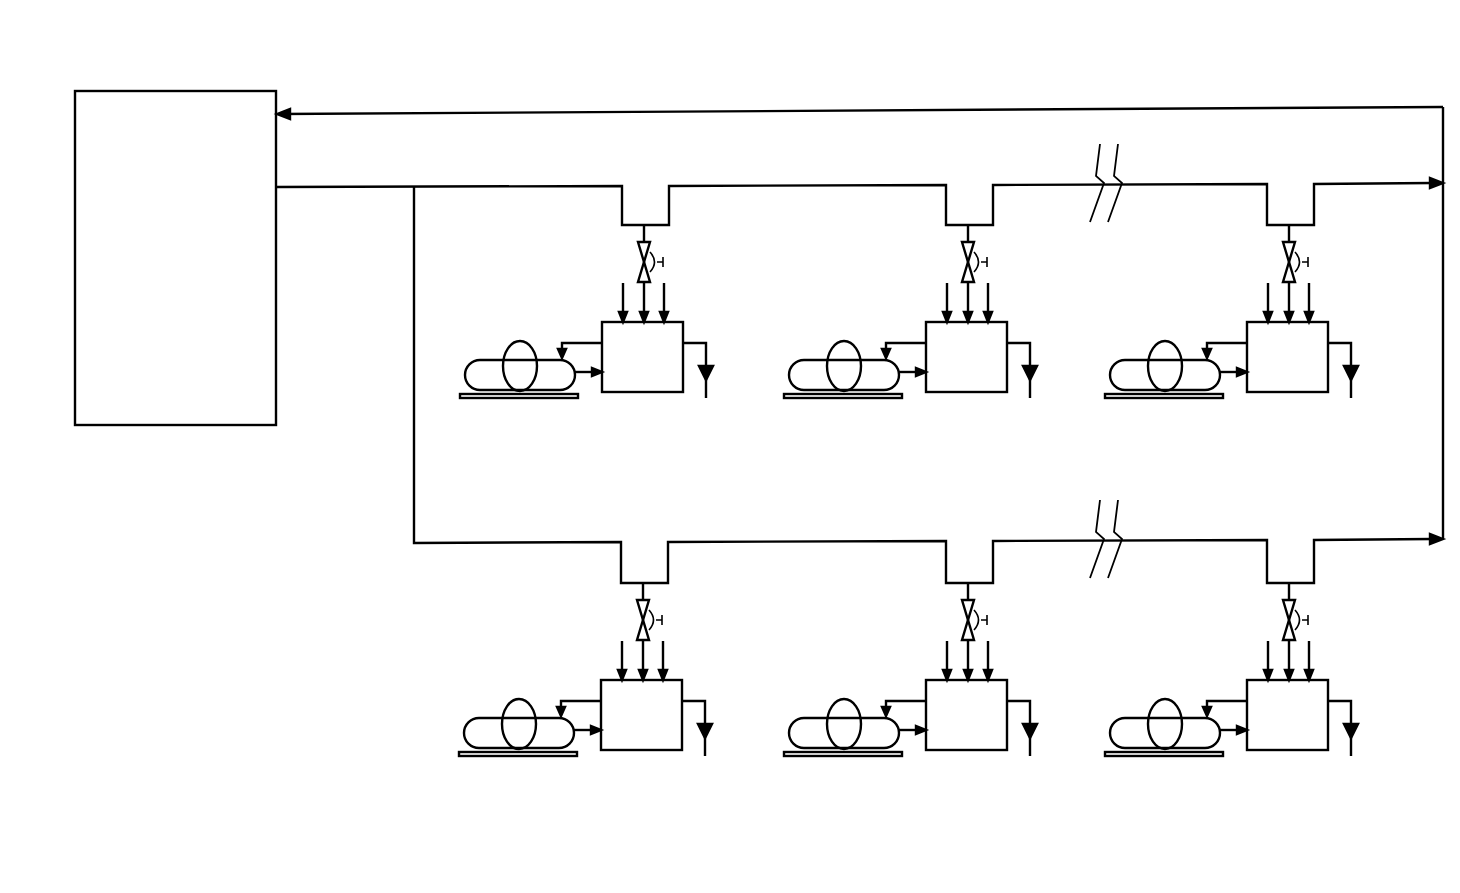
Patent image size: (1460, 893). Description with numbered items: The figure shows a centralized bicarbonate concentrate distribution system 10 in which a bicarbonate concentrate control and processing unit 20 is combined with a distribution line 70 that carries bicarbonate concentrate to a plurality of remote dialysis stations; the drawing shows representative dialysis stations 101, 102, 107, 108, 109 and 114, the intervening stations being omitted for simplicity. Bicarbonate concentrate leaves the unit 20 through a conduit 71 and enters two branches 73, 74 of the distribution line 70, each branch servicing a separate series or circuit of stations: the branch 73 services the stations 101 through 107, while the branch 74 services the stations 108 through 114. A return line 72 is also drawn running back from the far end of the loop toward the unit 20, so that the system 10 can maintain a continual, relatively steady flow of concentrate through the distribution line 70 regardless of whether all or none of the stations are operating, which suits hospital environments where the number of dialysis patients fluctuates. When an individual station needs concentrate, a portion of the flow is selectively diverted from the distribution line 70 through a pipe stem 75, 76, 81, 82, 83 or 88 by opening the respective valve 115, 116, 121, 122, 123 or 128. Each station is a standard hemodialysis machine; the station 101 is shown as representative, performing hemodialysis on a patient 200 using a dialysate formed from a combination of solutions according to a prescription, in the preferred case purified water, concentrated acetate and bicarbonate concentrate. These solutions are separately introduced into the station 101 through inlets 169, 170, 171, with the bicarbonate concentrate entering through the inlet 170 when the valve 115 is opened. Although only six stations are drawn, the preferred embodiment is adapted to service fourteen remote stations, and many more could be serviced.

The centralized bicarbonate concentrate distribution system 10 is at (272, 86).
The bicarbonate concentrate control and processing unit 20 is at (175, 258).
The distribution line 70 is at (402, 458).
The conduit 71 is at (365, 190).
The return line 72 is at (707, 110).
The branch 73 is at (548, 186).
The branch 74 is at (414, 324).
The pipe stem 75 is at (640, 235).
The pipe stem 76 is at (981, 253).
The pipe stem 81 is at (1296, 253).
The pipe stem 82 is at (648, 611).
The pipe stem 83 is at (974, 614).
The pipe stem 88 is at (1295, 611).
The dialysis station 101 is at (578, 318).
The dialysis station 102 is at (914, 311).
The dialysis station 107 is at (1237, 311).
The dialysis station 108 is at (588, 669).
The dialysis station 109 is at (915, 669).
The dialysis station 114 is at (1236, 669).
The valve 115 is at (656, 266).
The valve 116 is at (1009, 250).
The valve 121 is at (1332, 251).
The valve 122 is at (683, 611).
The valve 123 is at (1010, 627).
The valve 128 is at (1331, 611).
The inlet 169 is at (622, 322).
The inlet 170 is at (639, 330).
The inlet 171 is at (664, 320).
The patient 200 is at (490, 358).